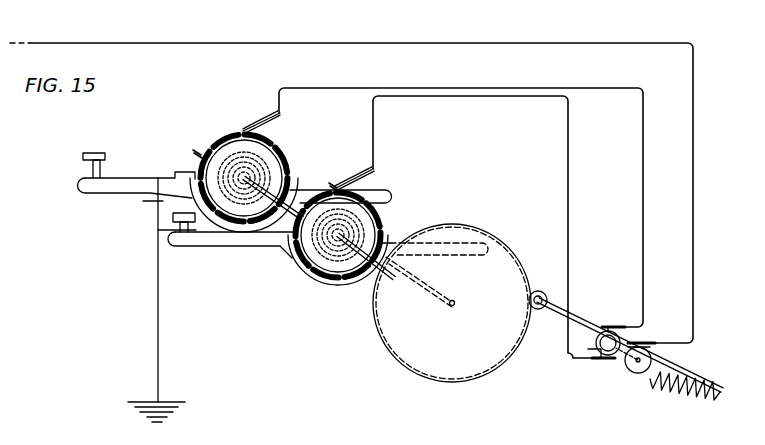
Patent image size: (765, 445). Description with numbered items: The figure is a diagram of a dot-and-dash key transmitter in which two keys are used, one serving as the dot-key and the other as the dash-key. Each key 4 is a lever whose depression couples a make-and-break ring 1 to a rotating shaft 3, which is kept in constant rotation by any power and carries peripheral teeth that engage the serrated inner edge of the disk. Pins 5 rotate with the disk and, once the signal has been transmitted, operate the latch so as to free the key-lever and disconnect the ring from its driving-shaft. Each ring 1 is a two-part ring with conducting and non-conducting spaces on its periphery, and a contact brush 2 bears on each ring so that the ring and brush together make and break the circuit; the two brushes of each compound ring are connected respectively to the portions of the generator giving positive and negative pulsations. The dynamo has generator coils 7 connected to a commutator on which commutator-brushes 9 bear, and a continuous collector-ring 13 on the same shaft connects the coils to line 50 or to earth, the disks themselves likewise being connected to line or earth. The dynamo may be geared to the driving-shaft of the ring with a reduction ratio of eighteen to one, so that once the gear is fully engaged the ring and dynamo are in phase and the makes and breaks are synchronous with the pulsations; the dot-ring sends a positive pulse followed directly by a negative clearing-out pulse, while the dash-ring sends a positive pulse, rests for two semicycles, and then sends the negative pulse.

The line 50 is at (351, 178).
The make-and-break ring 1 is at (287, 176).
The contact brush 2 is at (262, 121).
The rotating shaft 3 is at (306, 216).
The key 4 is at (137, 192).
The pins 5 is at (192, 152).
The commutator-brushes 9 is at (612, 326).
The collector-ring 13 is at (636, 369).
The generator coils 7 is at (678, 397).